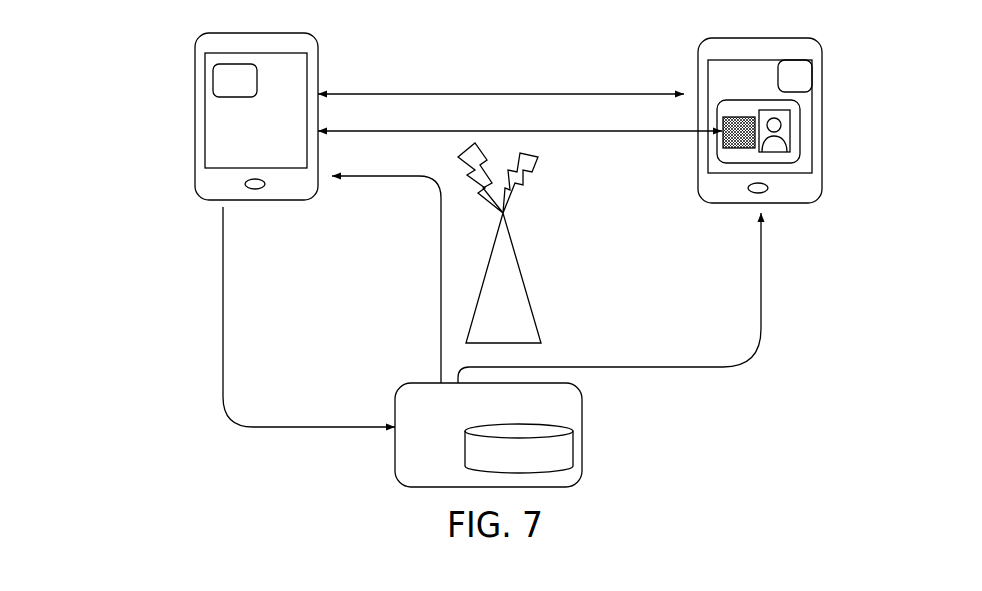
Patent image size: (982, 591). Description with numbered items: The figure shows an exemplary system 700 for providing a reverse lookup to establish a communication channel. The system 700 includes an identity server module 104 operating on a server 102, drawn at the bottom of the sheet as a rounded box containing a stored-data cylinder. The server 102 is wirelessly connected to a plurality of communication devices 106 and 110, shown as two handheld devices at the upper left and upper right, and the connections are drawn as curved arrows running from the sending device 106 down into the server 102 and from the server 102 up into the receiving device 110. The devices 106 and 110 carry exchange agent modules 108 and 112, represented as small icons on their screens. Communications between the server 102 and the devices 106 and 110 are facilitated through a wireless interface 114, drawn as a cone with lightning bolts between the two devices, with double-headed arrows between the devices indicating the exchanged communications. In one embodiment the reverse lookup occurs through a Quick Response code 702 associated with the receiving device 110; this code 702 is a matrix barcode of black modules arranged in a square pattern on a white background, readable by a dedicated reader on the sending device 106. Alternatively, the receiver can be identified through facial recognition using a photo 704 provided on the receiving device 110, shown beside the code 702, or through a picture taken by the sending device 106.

The system 700 is at (86, 29).
The server 102 is at (582, 407).
The identity server module 104 is at (573, 450).
The communication device 106 is at (195, 137).
The exchange agent module 108 is at (213, 79).
The communication device 110 is at (822, 181).
The exchange agent module 112 is at (808, 70).
The wireless interface 114 is at (521, 271).
The Quick Response (QR) code 702 is at (725, 136).
The photo 704 is at (790, 133).